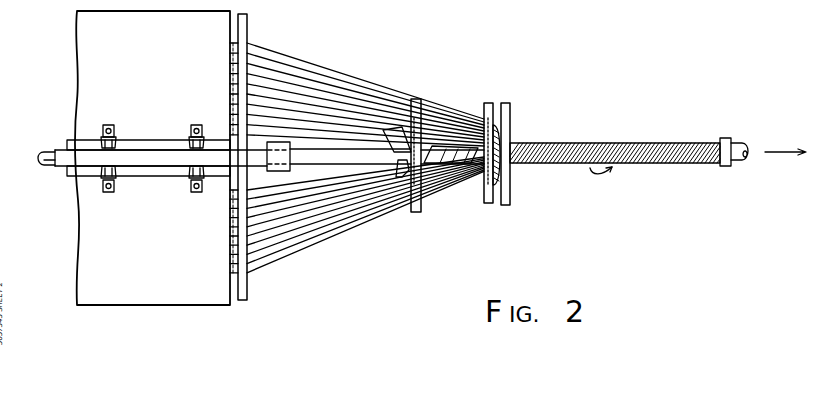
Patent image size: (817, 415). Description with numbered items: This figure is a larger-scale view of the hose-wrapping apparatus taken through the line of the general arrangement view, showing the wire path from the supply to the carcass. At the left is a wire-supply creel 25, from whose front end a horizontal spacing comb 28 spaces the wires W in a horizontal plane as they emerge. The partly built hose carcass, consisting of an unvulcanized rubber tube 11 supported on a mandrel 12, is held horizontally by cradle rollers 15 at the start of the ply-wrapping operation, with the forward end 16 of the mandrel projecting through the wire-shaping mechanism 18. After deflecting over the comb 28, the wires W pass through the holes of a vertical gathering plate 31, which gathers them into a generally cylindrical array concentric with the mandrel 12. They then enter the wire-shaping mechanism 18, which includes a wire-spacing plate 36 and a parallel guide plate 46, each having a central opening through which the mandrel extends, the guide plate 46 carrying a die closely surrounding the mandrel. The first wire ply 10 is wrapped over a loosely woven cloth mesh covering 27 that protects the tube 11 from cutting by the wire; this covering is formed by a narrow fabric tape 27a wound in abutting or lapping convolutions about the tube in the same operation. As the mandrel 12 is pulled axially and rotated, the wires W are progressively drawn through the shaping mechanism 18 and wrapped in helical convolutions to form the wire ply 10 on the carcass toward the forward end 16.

The wire-supply creel 25 is at (77, 50).
The horizontal spacing comb 28 is at (247, 290).
The wires W is at (320, 78).
The cradle rollers 15 is at (190, 170).
The unvulcanized rubber tube 11 is at (65, 155).
The mandrel 12 is at (43, 162).
The fabric tape 27a is at (386, 128).
The cloth mesh covering 27 is at (441, 150).
The gathering plate 31 is at (418, 212).
The wire-spacing plate 36 is at (488, 203).
The guide plate 46 is at (507, 205).
The wire-shaping mechanism 18 is at (503, 92).
The wire ply 10 is at (673, 163).
The forward end of the mandrel 16 is at (735, 142).